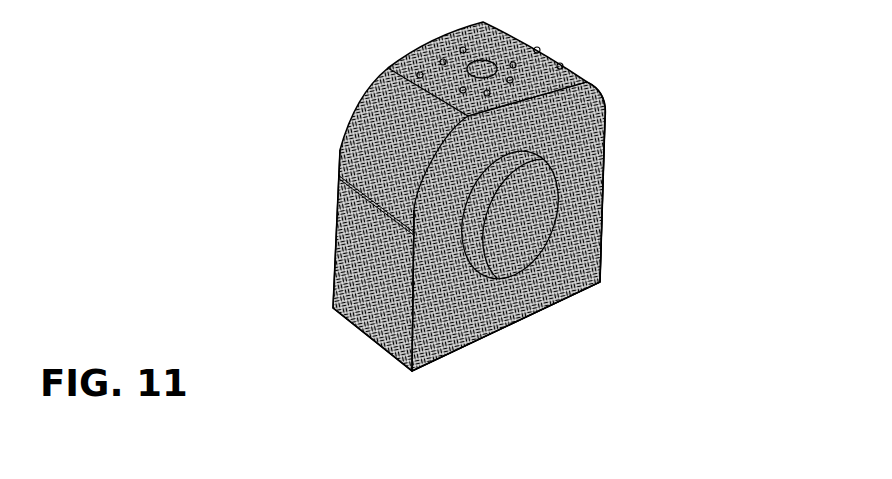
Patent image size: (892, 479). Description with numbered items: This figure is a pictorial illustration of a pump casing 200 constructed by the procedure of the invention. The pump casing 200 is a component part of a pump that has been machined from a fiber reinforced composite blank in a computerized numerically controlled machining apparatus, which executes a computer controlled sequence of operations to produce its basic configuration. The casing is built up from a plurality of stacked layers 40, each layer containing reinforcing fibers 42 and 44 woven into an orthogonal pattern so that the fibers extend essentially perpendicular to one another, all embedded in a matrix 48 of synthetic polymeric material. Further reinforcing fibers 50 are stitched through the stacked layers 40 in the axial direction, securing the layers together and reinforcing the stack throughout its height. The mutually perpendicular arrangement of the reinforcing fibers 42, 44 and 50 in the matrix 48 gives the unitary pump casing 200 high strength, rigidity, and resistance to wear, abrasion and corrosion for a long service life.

The pump casing 200 is at (589, 80).
The further reinforcing fibers 50 is at (588, 160).
The layers 40 is at (590, 226).
The reinforcing fibers 44 is at (365, 290).
The matrix 48 is at (405, 346).
The reinforcing fibers 42 is at (458, 313).